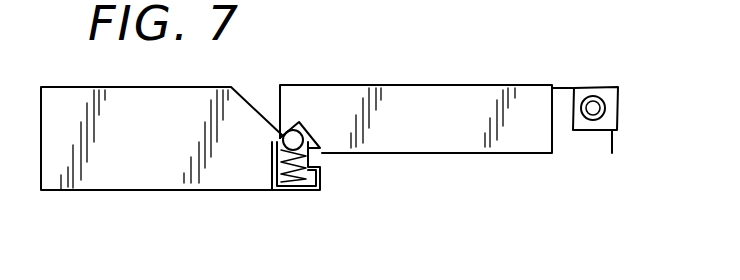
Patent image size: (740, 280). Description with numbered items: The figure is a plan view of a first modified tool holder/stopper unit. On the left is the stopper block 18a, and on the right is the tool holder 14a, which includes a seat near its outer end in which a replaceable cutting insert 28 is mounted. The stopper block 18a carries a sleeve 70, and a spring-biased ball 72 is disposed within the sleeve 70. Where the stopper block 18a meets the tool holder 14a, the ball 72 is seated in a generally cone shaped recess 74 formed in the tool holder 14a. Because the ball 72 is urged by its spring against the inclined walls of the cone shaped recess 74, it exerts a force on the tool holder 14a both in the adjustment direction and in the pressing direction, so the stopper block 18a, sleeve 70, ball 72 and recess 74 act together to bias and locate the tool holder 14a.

The stopper block 18a is at (127, 176).
The tool holder 14a is at (477, 110).
The replaceable cutting insert 28 is at (600, 87).
The sleeve 70 is at (293, 190).
The spring-biased ball 72 is at (320, 150).
The cone shaped recess 74 is at (297, 133).